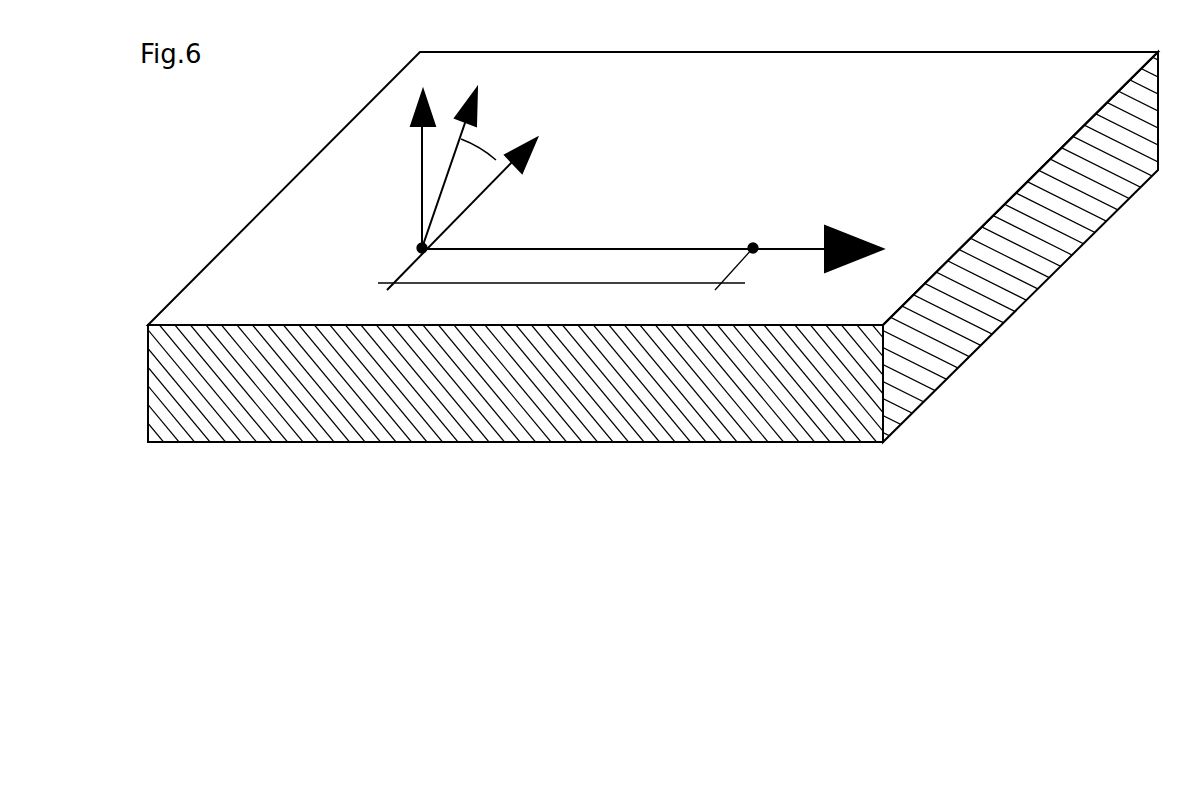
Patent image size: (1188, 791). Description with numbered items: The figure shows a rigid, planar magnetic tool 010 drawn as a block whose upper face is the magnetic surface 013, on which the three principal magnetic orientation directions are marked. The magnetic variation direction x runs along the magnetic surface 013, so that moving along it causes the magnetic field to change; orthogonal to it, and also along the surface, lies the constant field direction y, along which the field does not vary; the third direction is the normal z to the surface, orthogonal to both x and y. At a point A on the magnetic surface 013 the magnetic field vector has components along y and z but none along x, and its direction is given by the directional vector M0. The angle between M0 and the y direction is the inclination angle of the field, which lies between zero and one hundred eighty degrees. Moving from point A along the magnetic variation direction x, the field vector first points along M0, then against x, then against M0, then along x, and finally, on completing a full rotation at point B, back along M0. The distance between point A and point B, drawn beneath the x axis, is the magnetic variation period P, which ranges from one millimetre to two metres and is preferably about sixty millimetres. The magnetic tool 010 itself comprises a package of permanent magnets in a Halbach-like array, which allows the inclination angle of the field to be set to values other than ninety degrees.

The magnetic tool 010 is at (604, 285).
The magnetic surface 013 is at (291, 236).
The point A is at (432, 262).
The point B is at (747, 266).
The magnetic variation period P is at (561, 298).
The directional vector M0 is at (467, 163).
The magnetic variation direction x is at (652, 259).
The constant field direction y is at (465, 214).
The normal to the surface z is at (412, 169).